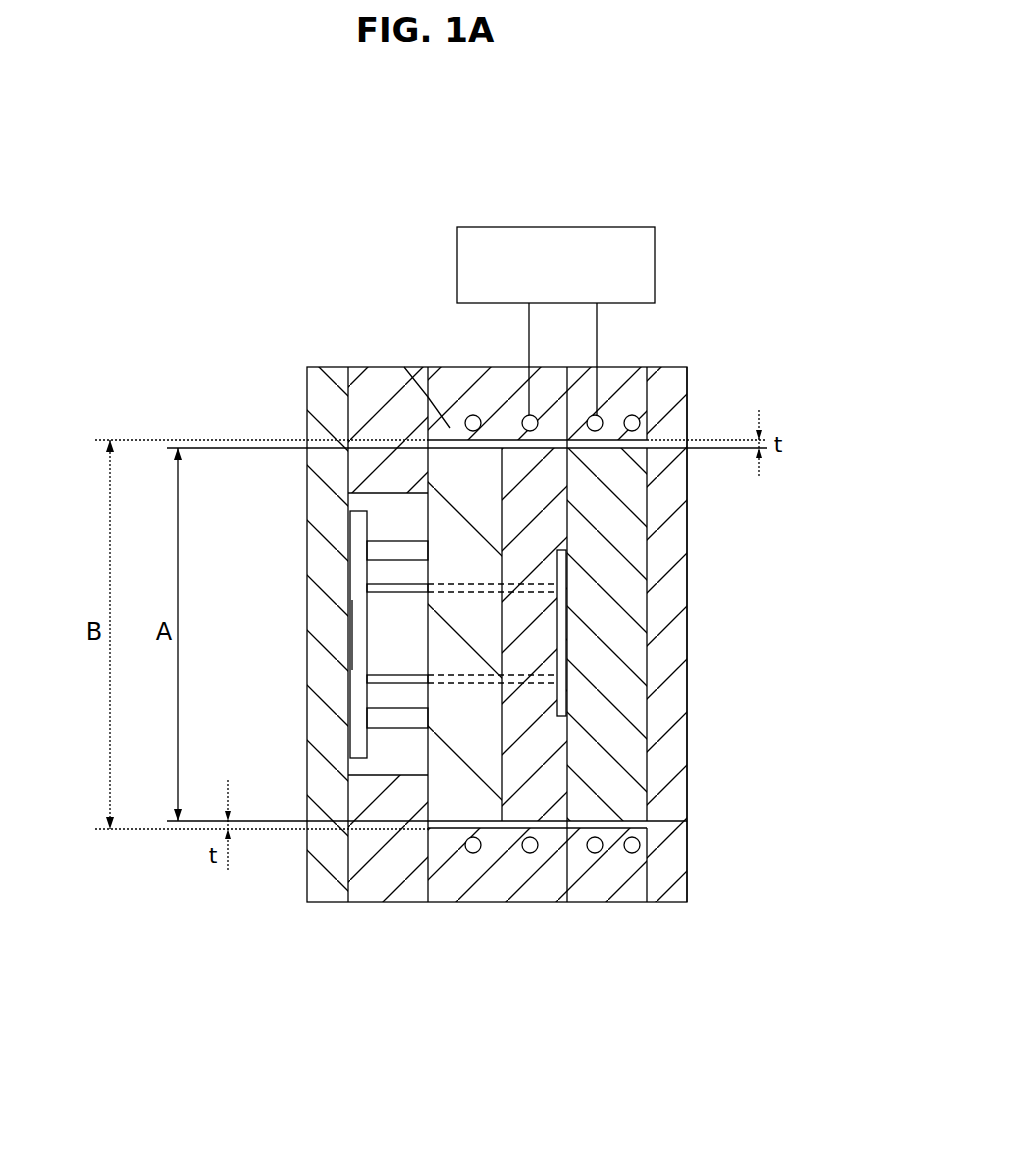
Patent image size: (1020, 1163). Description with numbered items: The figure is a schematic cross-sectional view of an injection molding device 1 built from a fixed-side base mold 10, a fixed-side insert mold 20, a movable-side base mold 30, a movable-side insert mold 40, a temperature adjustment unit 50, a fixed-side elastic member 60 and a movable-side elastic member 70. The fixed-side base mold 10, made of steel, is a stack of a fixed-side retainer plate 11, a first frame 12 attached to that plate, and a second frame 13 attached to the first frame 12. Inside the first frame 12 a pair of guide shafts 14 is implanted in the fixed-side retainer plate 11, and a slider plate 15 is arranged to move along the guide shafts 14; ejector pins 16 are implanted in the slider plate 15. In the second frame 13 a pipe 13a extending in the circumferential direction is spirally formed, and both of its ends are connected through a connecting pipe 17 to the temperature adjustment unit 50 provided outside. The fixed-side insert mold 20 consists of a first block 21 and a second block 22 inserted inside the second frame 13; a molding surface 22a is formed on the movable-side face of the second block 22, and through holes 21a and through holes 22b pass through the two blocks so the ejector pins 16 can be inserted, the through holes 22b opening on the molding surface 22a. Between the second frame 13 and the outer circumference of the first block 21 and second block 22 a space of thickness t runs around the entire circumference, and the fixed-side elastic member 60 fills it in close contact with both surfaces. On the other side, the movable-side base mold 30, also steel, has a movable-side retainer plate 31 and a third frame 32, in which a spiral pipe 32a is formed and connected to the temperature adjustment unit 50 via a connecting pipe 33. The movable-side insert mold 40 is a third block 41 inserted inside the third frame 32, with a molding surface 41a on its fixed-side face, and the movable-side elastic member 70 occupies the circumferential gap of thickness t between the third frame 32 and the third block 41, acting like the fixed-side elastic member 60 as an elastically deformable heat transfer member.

The injection molding device 1 is at (282, 396).
The fixed-side base mold 10 is at (307, 367).
The fixed-side retainer plate 11 is at (348, 484).
The first frame 12 is at (373, 388).
The second frame 13 is at (540, 872).
The pipe 13a is at (445, 437).
The guide shafts 14 is at (380, 545).
The slider plate 15 is at (358, 725).
The ejector pins 16 is at (395, 588).
The connecting pipe 17 is at (529, 352).
The fixed-side insert mold 20 is at (440, 783).
The first block 21 is at (482, 800).
The through holes 21a is at (358, 570).
The second block 22 is at (590, 790).
The molding surface 22a is at (567, 712).
The through holes 22b is at (566, 556).
The movable-side base mold 30 is at (687, 902).
The movable-side retainer plate 31 is at (680, 506).
The third frame 32 is at (622, 887).
The pipe 32a is at (687, 367).
The connecting pipe 33 is at (597, 352).
The movable-side insert mold 40 is at (540, 600).
The third block 41 is at (610, 655).
The molding surface 41a is at (650, 655).
The temperature adjustment unit 50 is at (655, 227).
The fixed-side elastic member 60 is at (404, 367).
The movable-side elastic member 70 is at (577, 828).